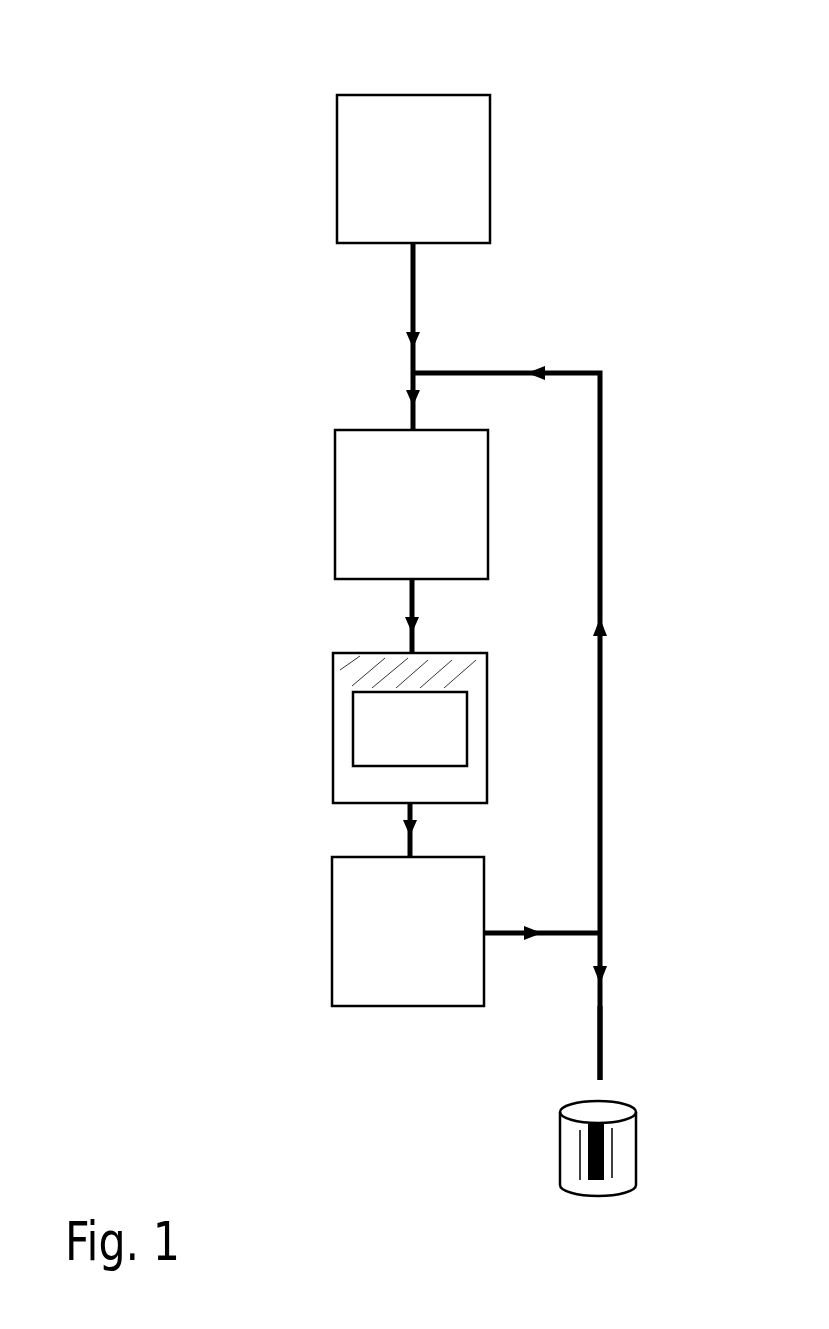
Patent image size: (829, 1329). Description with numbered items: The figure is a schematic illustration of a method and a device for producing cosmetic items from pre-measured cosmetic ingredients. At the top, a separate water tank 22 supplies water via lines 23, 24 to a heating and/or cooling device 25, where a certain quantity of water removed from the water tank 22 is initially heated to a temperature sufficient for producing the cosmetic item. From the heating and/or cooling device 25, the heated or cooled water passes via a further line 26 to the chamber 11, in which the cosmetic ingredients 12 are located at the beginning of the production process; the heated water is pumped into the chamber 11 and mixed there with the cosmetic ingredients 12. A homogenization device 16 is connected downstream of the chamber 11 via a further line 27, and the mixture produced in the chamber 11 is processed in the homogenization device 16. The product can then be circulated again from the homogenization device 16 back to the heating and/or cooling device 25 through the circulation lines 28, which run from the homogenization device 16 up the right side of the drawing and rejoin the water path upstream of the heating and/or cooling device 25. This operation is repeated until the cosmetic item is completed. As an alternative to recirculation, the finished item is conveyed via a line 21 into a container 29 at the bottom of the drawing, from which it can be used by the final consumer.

The chamber 11 is at (320, 731).
The cosmetic ingredients 12 is at (438, 729).
The homogenization device 16 is at (360, 983).
The line 21 is at (600, 1028).
The water tank 22 is at (422, 128).
The line 23 is at (411, 300).
The line 24 is at (411, 388).
The heating and/or cooling device 25 is at (380, 500).
The line 26 is at (410, 602).
The line 27 is at (410, 830).
The circulation lines 28 is at (488, 373).
The container 29 is at (622, 1145).